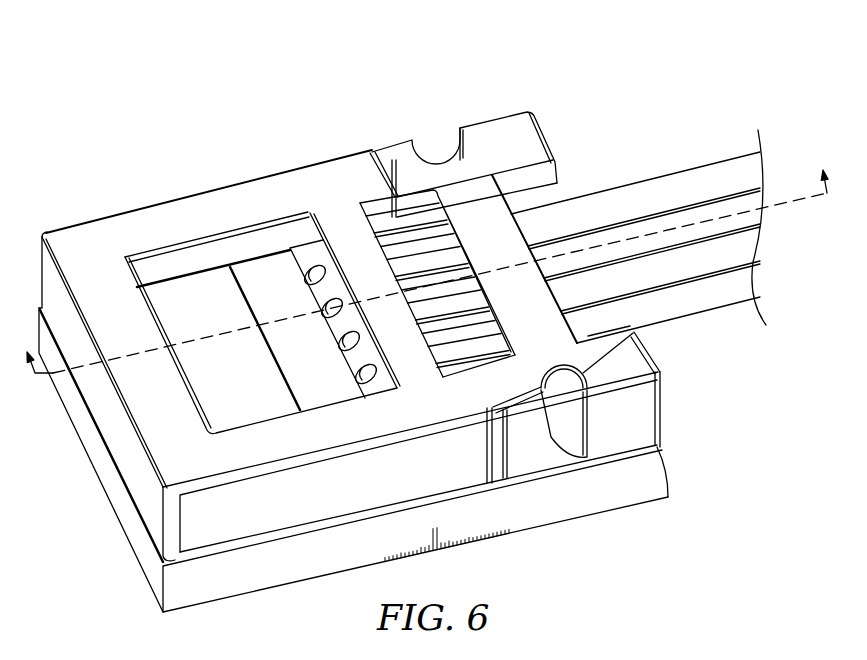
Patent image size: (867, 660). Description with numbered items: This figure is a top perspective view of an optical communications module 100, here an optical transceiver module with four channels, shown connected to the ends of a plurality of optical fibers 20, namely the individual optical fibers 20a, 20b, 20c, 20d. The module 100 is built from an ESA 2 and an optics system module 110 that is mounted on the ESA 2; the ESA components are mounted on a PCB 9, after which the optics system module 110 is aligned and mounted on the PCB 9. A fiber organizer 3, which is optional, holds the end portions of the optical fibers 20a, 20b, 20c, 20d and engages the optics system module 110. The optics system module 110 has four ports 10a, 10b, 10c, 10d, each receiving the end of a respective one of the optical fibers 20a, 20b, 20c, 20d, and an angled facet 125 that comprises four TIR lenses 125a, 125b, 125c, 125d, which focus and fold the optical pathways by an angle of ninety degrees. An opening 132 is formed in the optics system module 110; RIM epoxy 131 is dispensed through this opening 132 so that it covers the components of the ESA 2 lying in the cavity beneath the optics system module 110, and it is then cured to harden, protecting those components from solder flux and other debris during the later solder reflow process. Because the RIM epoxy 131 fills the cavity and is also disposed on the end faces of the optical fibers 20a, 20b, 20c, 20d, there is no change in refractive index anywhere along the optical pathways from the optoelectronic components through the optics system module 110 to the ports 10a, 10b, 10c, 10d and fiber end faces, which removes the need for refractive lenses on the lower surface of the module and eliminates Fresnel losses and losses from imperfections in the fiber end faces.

The optical communications module 100 is at (590, 45).
The ESA 2 is at (567, 507).
The fiber organizer 3 is at (398, 156).
The PCB 9 is at (657, 447).
The optics system module 110 is at (92, 233).
The opening 132 is at (195, 255).
The RIM epoxy 131 is at (217, 312).
The angled facet 125 is at (324, 312).
The TIR lens 125a is at (378, 365).
The TIR lens 125b is at (361, 332).
The TIR lens 125c is at (328, 315).
The TIR lens 125d is at (327, 265).
The port 10a is at (483, 342).
The port 10b is at (468, 313).
The port 10c is at (456, 274).
The port 10d is at (433, 247).
The optical fibers 20 is at (629, 228).
The optical fiber 20a is at (704, 306).
The optical fiber 20b is at (694, 273).
The optical fiber 20c is at (678, 240).
The optical fiber 20d is at (641, 213).